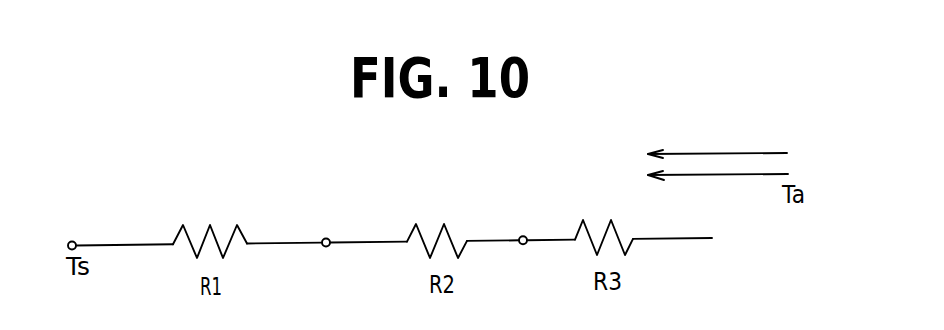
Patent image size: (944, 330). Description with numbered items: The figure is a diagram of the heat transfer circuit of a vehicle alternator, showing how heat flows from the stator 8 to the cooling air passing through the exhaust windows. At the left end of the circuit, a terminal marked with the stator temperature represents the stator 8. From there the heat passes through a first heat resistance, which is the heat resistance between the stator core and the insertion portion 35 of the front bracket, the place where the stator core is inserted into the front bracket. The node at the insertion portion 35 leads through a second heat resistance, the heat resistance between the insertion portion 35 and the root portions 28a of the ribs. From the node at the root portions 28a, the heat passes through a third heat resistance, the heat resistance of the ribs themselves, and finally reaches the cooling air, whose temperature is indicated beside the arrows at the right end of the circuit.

The stator 8 is at (73, 241).
The insertion portion 35 is at (327, 238).
The root portions 28a is at (524, 236).